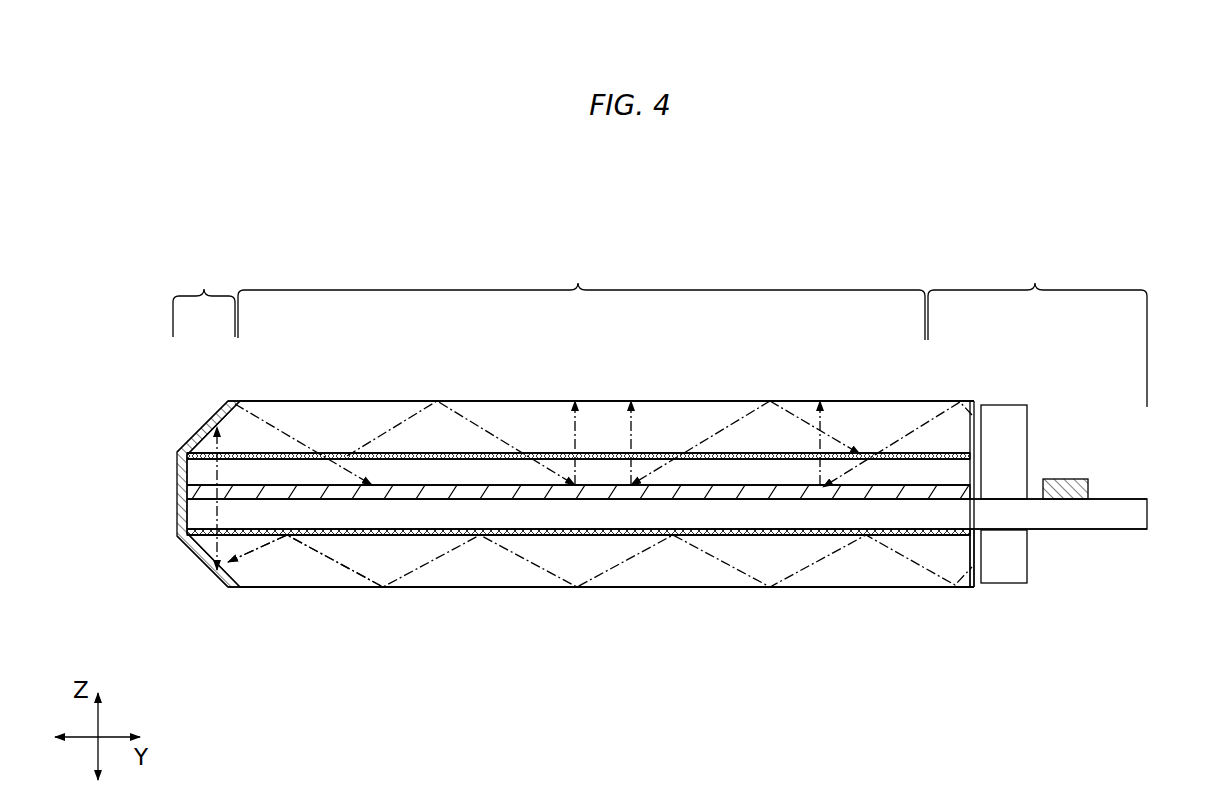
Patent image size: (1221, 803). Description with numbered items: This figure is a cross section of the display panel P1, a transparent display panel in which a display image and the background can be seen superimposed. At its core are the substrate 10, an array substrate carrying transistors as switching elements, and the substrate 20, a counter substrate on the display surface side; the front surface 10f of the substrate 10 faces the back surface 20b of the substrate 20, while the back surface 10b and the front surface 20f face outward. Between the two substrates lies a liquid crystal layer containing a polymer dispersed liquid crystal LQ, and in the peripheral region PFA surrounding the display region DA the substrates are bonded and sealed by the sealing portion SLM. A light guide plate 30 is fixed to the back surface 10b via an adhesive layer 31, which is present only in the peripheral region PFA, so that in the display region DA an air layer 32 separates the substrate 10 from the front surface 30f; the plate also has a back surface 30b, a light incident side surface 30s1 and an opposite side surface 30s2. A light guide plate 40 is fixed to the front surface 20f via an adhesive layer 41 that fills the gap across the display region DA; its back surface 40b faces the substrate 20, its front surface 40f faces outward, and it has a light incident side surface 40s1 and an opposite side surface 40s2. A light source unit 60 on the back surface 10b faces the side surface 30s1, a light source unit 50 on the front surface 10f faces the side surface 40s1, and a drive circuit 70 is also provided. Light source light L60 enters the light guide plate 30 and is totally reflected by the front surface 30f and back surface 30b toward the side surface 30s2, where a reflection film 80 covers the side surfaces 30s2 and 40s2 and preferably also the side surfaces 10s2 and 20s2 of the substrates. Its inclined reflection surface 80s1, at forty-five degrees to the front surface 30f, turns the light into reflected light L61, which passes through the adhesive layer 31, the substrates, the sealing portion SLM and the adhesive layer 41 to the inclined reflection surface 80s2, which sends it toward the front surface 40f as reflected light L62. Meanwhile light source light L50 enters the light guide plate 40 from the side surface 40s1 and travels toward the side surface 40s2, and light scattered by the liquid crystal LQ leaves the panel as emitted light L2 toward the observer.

The display panel P1 is at (396, 260).
The peripheral region PFA is at (660, 329).
The display region DA is at (581, 295).
The reflection film 80 is at (195, 425).
The reflection surface 80s1 is at (234, 566).
The reflection surface 80s2 is at (243, 403).
The light guide plate 40 is at (185, 440).
The front surface 40f is at (505, 399).
The back surface 40b is at (275, 456).
The side surface 40s1 is at (977, 438).
The side surface 40s2 is at (189, 429).
The adhesive layer 41 is at (712, 452).
The substrate 20 is at (578, 472).
The side surface 20s2 is at (185, 465).
The front surface 20f is at (390, 458).
The back surface 20b is at (470, 485).
The sealing portion SLM is at (190, 493).
The substrate 10 is at (667, 514).
The side surface 10s2 is at (185, 519).
The front surface 10f is at (528, 501).
The back surface 10b is at (783, 530).
The adhesive layer 31 is at (205, 537).
The light guide plate 30 is at (185, 553).
The front surface 30f is at (688, 537).
The back surface 30b is at (450, 589).
The side surface 30s1 is at (981, 562).
The side surface 30s2 is at (189, 561).
The air layer 32 is at (613, 588).
The light source unit 50 is at (1020, 433).
The light source unit 60 is at (1018, 553).
The drive circuit 70 is at (1085, 480).
The emitted light L2 is at (568, 445).
The light source light L50 is at (885, 440).
The light source light L60 is at (822, 590).
The reflected light L61 is at (300, 560).
The reflected light L62 is at (362, 430).
The liquid crystal LQ is at (372, 540).